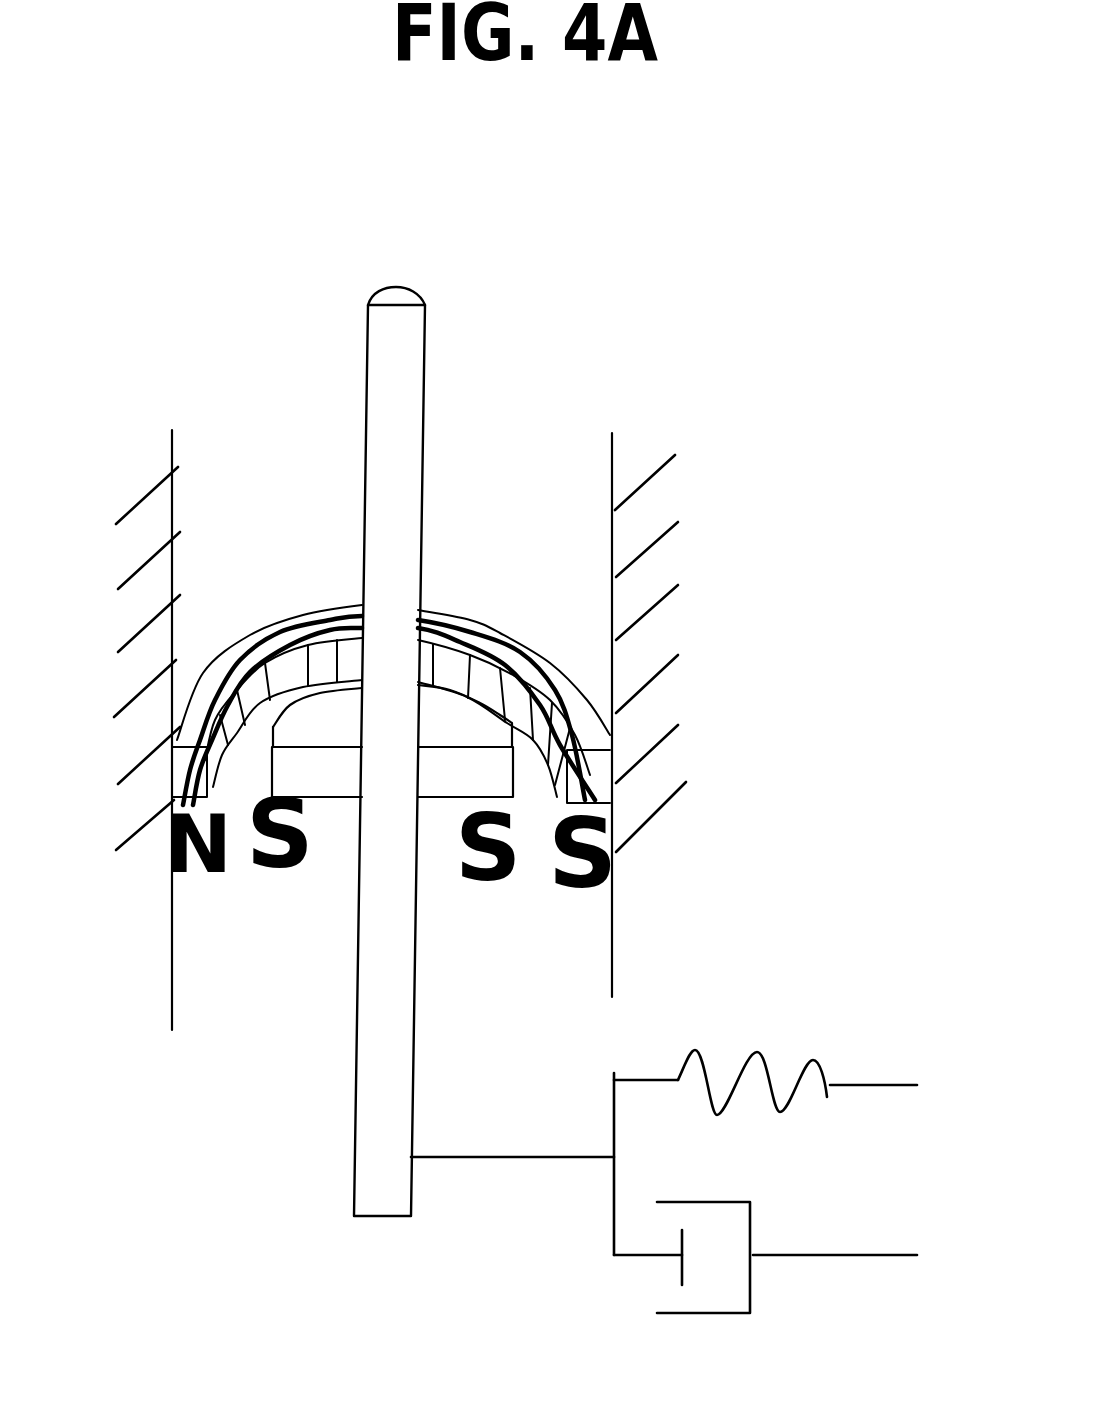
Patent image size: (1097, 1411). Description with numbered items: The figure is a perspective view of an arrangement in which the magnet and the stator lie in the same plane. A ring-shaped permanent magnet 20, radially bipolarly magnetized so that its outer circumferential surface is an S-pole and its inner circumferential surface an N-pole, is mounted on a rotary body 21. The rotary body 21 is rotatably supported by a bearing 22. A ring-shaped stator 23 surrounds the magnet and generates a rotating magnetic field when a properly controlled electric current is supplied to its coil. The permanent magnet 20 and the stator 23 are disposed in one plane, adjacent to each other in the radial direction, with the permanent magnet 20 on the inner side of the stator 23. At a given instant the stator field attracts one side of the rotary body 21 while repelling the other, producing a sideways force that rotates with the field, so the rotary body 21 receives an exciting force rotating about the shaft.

The permanent magnet 20 is at (457, 767).
The rotary body 21 is at (420, 390).
The bearing 22 is at (802, 1128).
The stator 23 is at (608, 798).